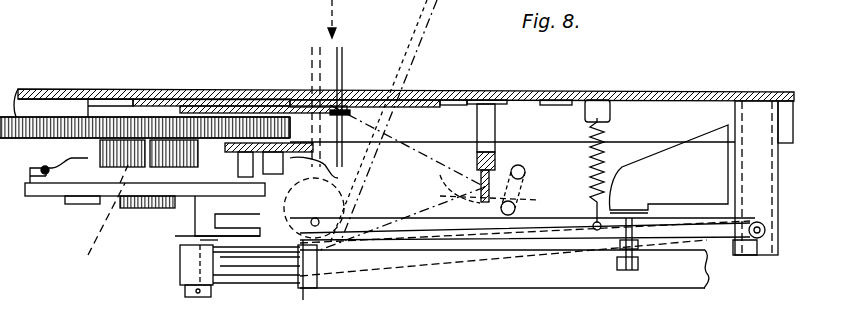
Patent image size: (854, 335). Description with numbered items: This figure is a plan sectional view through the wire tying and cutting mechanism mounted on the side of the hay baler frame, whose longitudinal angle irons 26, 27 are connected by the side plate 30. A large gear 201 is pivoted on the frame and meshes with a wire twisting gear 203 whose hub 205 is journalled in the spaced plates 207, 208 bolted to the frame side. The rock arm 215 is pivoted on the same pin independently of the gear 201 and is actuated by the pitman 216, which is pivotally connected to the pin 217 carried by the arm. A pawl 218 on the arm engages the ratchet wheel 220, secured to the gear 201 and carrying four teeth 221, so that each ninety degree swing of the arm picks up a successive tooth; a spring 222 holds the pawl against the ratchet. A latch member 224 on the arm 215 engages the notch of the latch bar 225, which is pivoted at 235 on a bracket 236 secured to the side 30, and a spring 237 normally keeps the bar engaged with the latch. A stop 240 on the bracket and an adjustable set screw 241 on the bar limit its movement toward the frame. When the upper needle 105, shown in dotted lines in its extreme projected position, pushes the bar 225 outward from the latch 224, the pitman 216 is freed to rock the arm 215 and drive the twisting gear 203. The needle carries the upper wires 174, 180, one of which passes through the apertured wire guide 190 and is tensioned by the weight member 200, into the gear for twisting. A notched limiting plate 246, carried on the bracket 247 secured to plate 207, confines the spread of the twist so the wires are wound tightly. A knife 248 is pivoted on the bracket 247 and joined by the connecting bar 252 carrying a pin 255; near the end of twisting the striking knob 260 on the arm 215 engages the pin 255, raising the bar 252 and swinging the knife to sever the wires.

The longitudinal angle iron 26 is at (42, 108).
The longitudinal angle iron 27 is at (440, 98).
The side plate 30 is at (106, 98).
The needle 105 is at (346, 58).
The upper wire 174 is at (432, 12).
The upper wire 180 is at (444, 185).
The apertured wire guide 190 is at (505, 168).
The weight member 200 is at (522, 187).
The large gear 201 is at (73, 125).
The wire twisting gear 203 is at (352, 101).
The hub 205 is at (313, 83).
The plate 207 is at (248, 143).
The plate 208 is at (233, 108).
The rock arm 215 is at (84, 198).
The pitman 216 is at (468, 279).
The pin 217 is at (208, 298).
The pawl 218 is at (101, 220).
The ratchet wheel 220 is at (163, 148).
The teeth 221 is at (193, 148).
The spring 222 is at (46, 180).
The latch member 224 is at (224, 212).
The latch bar 225 is at (396, 232).
The pivot 235 is at (758, 240).
The bracket 236 is at (757, 103).
The spring 237 is at (603, 162).
The stop 240 is at (636, 207).
The adjustable set screw 241 is at (630, 272).
The notched limiting plate 246 is at (305, 252).
The bracket 247 is at (280, 173).
The knife 248 is at (300, 152).
The connecting bar 252 is at (214, 200).
The pin 255 is at (228, 212).
The striking knob 260 is at (126, 208).